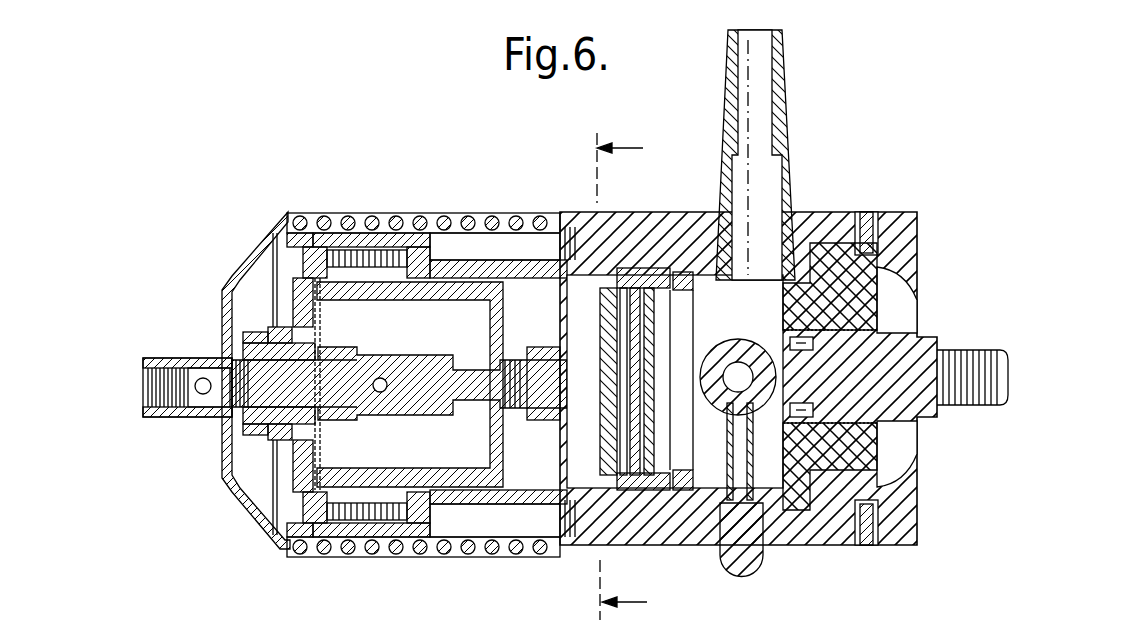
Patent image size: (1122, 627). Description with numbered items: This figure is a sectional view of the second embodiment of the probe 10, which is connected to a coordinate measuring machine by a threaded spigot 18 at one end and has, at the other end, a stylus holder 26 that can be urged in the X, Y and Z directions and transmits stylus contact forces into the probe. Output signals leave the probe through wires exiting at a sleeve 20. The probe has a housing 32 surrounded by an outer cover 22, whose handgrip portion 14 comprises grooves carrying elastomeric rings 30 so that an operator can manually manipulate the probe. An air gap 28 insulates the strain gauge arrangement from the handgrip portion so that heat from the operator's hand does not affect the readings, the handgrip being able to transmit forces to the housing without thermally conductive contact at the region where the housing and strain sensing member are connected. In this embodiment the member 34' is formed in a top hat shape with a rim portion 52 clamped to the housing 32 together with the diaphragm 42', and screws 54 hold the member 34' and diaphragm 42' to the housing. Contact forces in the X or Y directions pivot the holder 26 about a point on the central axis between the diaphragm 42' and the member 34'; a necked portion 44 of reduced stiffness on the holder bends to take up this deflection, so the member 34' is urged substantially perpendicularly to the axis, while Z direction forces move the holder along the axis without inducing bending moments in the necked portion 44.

The probe 10 is at (198, 482).
The handgrip portion 14 is at (545, 206).
The threaded spigot 18 is at (968, 348).
The sleeve 20 is at (786, 96).
The outer cover 22 is at (262, 535).
The stylus holder 26 is at (177, 358).
The air gap 28 is at (522, 514).
The elastomeric rings 30 is at (305, 552).
The housing 32 is at (460, 498).
The member 34' is at (436, 384).
The diaphragm 42' is at (361, 287).
The necked portion 44 is at (453, 363).
The rim portion 52 is at (328, 478).
The screws 54 is at (286, 238).